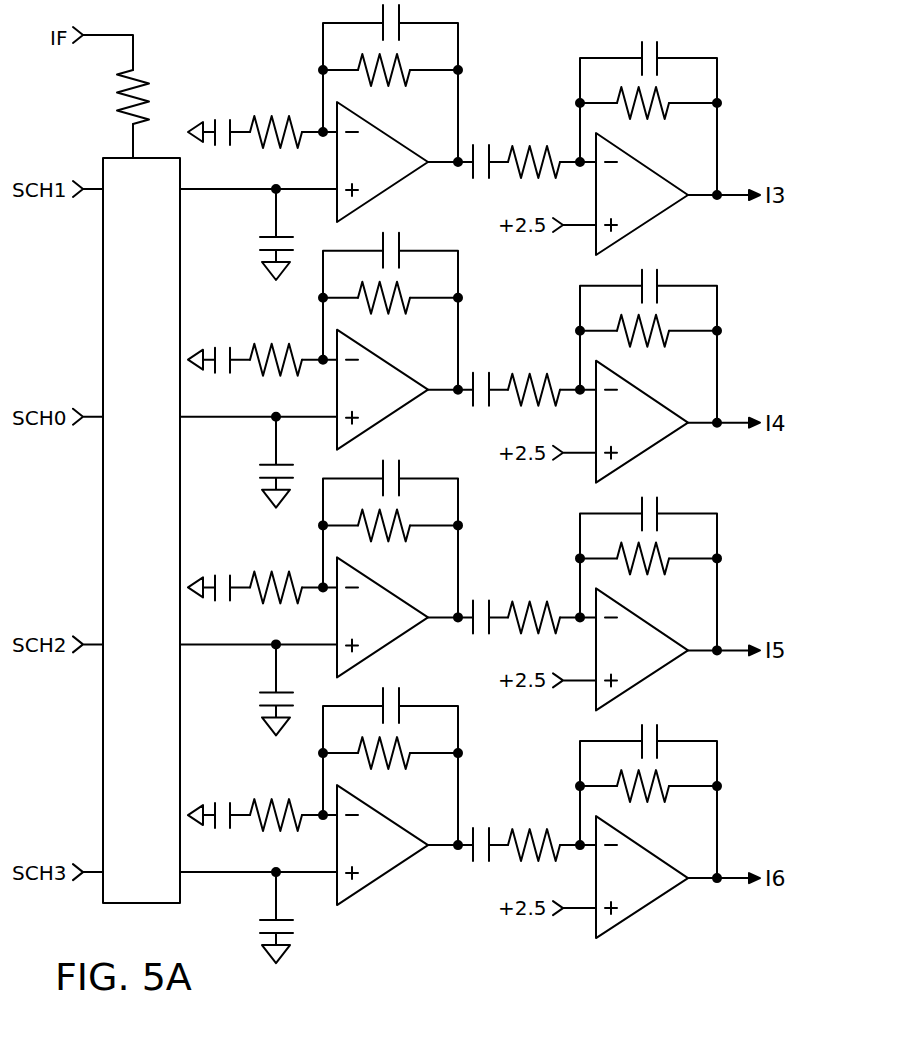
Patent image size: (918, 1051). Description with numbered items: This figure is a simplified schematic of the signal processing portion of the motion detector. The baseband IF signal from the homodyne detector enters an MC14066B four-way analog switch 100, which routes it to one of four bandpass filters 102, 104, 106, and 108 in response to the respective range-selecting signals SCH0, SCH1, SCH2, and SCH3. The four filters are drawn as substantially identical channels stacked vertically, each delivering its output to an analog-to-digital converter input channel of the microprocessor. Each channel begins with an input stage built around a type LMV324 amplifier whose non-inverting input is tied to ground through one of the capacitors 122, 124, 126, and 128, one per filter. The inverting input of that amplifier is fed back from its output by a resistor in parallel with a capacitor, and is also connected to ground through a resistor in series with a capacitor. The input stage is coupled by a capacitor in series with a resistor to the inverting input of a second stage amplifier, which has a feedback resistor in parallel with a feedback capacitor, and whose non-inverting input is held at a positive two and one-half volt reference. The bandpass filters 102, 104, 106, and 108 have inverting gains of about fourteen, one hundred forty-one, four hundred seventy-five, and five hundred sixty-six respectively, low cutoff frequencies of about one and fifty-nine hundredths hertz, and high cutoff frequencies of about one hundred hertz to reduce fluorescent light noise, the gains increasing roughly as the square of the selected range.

The analog switch 100 is at (112, 172).
The bandpass filter 102 is at (685, 366).
The bandpass filter 104 is at (685, 138).
The bandpass filter 106 is at (685, 593).
The bandpass filter 108 is at (685, 821).
The capacitor 122 is at (244, 462).
The capacitor 124 is at (268, 233).
The capacitor 126 is at (244, 689).
The capacitor 128 is at (244, 917).